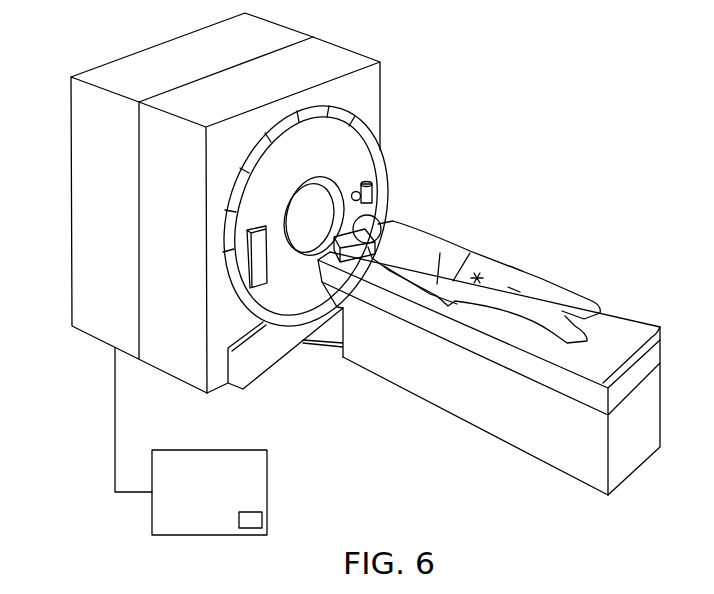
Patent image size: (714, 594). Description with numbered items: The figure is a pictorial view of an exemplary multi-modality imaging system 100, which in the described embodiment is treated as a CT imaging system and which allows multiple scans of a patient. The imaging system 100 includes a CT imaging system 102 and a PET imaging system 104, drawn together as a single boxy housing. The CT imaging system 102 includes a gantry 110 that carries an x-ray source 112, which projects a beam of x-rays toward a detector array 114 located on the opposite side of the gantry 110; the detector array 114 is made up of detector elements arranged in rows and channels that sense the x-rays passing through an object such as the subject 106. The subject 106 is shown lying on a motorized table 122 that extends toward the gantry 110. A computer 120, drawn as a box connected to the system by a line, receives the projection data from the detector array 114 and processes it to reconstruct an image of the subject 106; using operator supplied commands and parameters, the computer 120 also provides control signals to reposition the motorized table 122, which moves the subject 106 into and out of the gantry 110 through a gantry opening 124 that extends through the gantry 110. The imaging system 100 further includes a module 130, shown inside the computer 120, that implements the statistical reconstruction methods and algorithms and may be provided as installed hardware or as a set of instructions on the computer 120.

The multi-modality imaging system 100 is at (542, 80).
The CT imaging system 102 is at (167, 363).
The PET imaging system 104 is at (96, 332).
The subject 106 is at (437, 250).
The gantry 110 is at (372, 78).
The x-ray source 112 is at (373, 190).
The detector array 114 is at (256, 268).
The computer 120 is at (267, 462).
The motorized table 122 is at (470, 405).
The gantry opening 124 is at (333, 207).
The module 130 is at (251, 520).